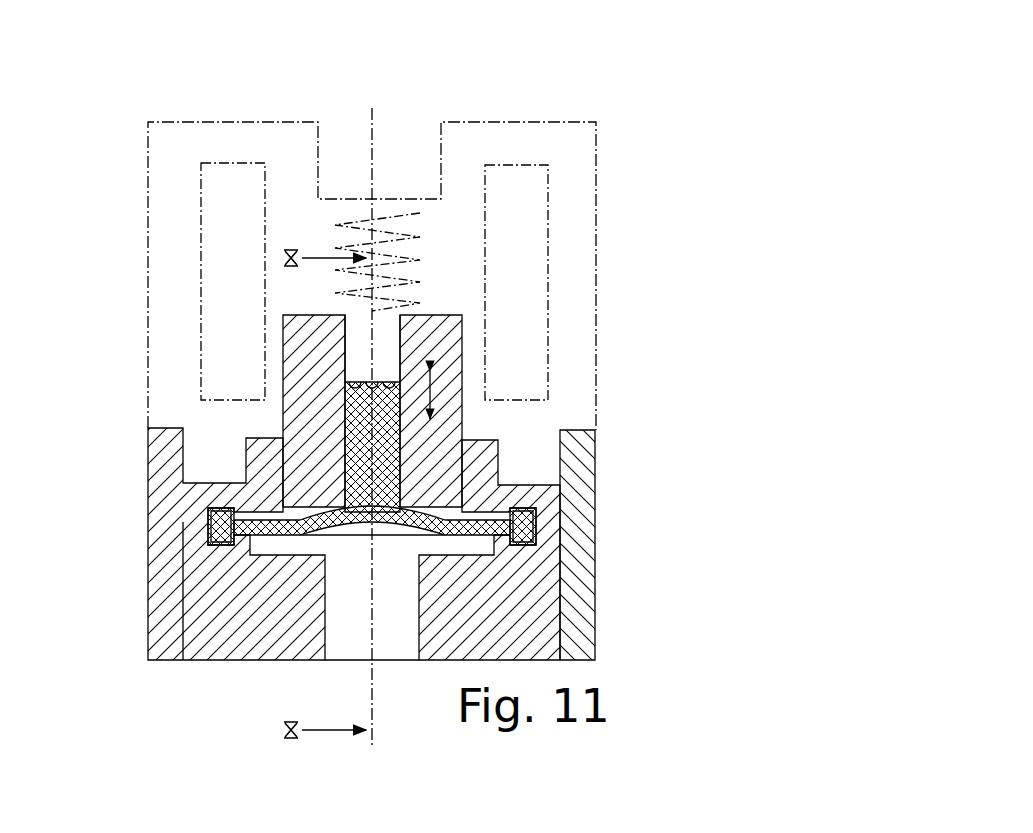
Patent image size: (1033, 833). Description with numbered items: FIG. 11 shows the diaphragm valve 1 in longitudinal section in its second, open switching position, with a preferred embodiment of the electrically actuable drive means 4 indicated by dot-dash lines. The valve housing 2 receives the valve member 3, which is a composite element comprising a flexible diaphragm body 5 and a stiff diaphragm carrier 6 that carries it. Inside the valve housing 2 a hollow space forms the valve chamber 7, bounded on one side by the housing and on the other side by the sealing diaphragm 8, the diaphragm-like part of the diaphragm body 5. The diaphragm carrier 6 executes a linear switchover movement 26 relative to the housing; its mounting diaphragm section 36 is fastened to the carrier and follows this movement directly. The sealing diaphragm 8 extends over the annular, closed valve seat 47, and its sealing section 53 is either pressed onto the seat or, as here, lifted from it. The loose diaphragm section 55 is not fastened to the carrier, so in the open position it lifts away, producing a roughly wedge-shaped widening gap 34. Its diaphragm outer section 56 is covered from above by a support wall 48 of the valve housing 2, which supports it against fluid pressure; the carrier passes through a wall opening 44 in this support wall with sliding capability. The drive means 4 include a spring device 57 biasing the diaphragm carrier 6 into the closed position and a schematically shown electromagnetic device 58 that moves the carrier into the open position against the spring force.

The diaphragm valve 1 is at (640, 176).
The valve housing 2 is at (150, 601).
The valve member 3 is at (456, 332).
The electrically actuable drive means 4 is at (568, 125).
The diaphragm body 5 is at (268, 514).
The diaphragm carrier 6 is at (450, 362).
The valve chamber 7 is at (268, 547).
The sealing diaphragm 8 is at (450, 513).
The switchover movement 26 is at (432, 393).
The wedge-shaped widening gap 34 is at (472, 512).
The mounting diaphragm section 36 is at (378, 512).
The wall opening 44 is at (285, 458).
The valve seat 47 is at (322, 540).
The support wall 48 is at (250, 515).
The sealing section 53 is at (320, 506).
The loose diaphragm section 55 is at (423, 507).
The diaphragm outer section 56 is at (488, 540).
The spring device 57 is at (393, 200).
The electromagnetic device 58 is at (205, 203).